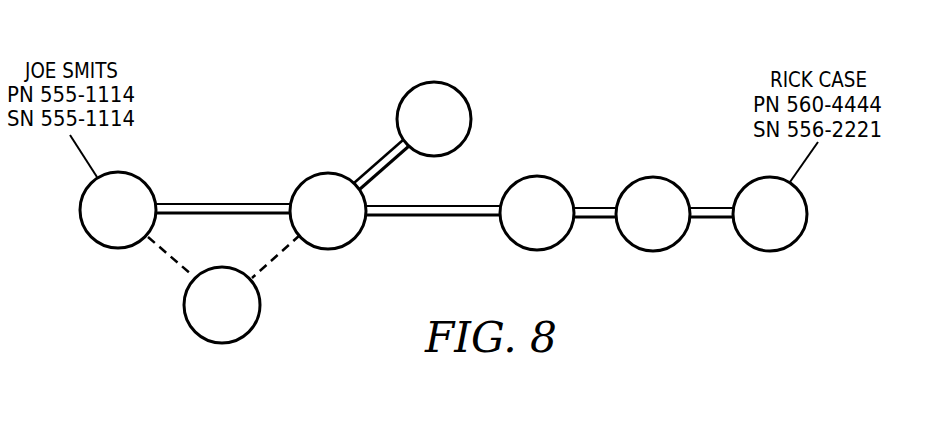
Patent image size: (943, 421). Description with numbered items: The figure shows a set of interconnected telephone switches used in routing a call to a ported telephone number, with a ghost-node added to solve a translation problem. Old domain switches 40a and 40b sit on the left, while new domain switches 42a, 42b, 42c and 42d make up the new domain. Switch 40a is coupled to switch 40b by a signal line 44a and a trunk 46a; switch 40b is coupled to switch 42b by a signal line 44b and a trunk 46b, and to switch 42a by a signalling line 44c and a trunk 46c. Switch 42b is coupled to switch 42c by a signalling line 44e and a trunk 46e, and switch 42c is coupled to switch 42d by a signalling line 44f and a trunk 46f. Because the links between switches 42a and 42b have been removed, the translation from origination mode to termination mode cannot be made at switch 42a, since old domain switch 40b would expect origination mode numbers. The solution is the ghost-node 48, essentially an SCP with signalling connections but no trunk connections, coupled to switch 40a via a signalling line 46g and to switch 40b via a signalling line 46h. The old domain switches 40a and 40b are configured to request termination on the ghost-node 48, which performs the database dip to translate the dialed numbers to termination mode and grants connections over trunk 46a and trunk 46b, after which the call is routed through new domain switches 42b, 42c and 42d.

The old domain switch 40a is at (115, 248).
The old domain switch 40b is at (327, 252).
The new domain switch 42a is at (435, 82).
The new domain switch 42b is at (535, 252).
The new domain switch 42c is at (650, 253).
The new domain switch 42d is at (768, 253).
The signal line 44a is at (223, 203).
The signal line 44b is at (463, 205).
The signalling line 44c is at (378, 160).
The signalling line 44e is at (597, 206).
The signalling line 44f is at (713, 207).
The trunk 46a is at (223, 216).
The trunk 46b is at (433, 218).
The trunk 46c is at (397, 163).
The trunk 46e is at (598, 220).
The trunk 46f is at (718, 220).
The signalling line 46g is at (178, 268).
The signalling line 46h is at (273, 267).
The ghost-node 48 is at (220, 345).